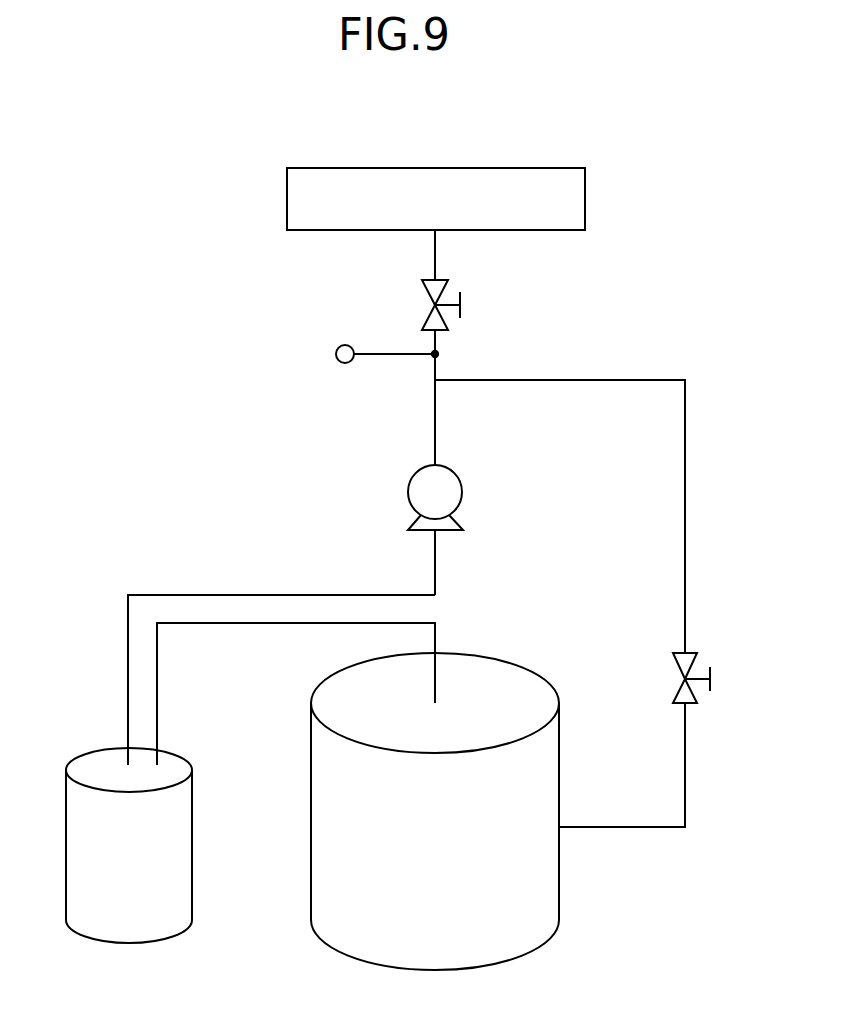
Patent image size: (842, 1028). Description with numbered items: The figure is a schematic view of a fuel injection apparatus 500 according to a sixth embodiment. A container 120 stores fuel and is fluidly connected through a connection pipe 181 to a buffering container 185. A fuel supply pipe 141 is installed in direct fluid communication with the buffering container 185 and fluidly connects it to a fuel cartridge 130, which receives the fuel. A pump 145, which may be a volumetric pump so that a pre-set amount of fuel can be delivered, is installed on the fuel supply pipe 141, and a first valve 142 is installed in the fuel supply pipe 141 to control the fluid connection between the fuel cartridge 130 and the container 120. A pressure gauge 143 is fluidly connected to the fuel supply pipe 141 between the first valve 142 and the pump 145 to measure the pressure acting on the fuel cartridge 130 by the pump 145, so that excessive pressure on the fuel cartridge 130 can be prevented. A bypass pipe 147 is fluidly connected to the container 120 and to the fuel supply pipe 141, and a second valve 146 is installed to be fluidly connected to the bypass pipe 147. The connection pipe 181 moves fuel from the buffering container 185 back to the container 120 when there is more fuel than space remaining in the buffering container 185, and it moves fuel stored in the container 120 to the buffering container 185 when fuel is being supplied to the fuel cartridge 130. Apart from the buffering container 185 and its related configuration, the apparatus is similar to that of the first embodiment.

The fuel injection apparatus 500 is at (431, 134).
The fuel cartridge 130 is at (585, 197).
The fuel supply pipe 141 is at (433, 427).
The first valve 142 is at (423, 297).
The pressure gauge 143 is at (335, 354).
The pump 145 is at (408, 492).
The bypass pipe 147 is at (686, 497).
The second valve 146 is at (673, 667).
The connection pipe 181 is at (222, 624).
The container 120 is at (332, 810).
The buffering container 185 is at (165, 873).